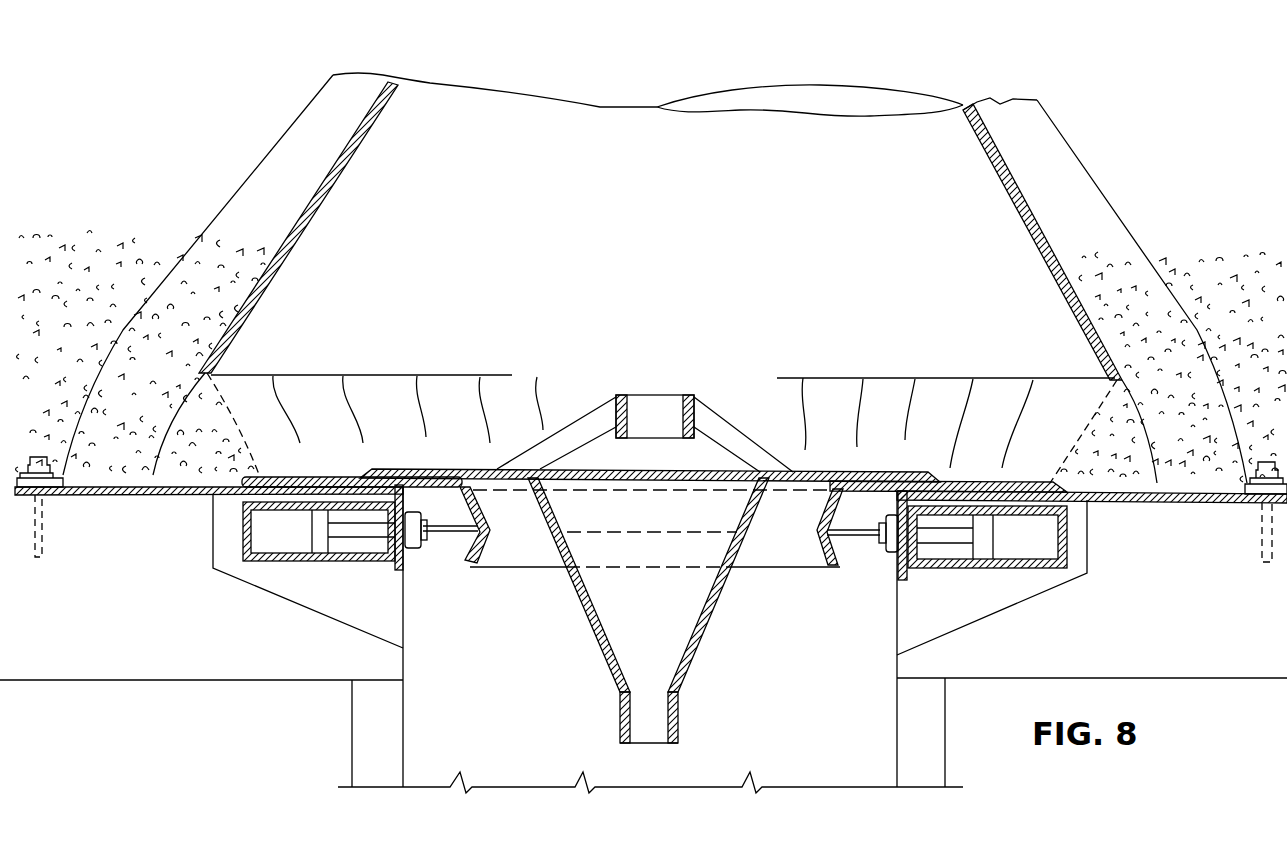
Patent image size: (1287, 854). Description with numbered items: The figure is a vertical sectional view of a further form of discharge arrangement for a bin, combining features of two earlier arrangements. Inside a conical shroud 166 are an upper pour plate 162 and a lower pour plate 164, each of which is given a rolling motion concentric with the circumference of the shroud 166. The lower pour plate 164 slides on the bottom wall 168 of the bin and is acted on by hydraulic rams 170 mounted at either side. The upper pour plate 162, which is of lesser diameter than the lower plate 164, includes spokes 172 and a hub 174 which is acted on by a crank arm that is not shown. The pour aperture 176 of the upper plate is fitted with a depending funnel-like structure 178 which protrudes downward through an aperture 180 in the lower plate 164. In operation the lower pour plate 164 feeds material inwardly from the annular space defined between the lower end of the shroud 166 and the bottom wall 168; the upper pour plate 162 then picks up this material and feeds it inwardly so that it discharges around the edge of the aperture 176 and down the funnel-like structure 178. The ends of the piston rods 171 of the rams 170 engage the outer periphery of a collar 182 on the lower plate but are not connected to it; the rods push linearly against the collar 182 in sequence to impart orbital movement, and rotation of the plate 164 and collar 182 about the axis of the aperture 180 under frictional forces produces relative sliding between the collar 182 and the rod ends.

The upper pour plate 162 is at (456, 469).
The lower pour plate 164 is at (318, 477).
The conical shroud 166 is at (990, 147).
The bottom wall 168 is at (183, 497).
The hydraulic rams 170 is at (330, 562).
The piston rods 171 is at (443, 537).
The spokes 172 is at (742, 460).
The hub 174 is at (687, 393).
The pour aperture 176 is at (580, 469).
The funnel-like structure 178 is at (578, 592).
The aperture 180 is at (785, 568).
The collar 182 is at (456, 568).